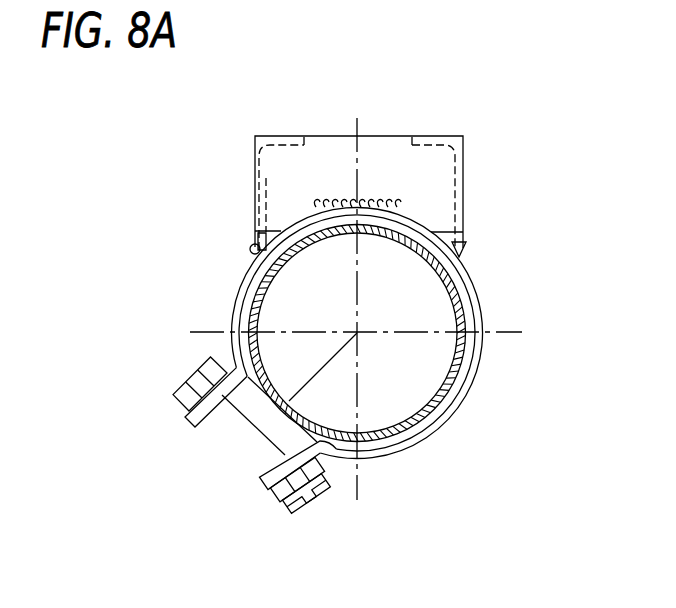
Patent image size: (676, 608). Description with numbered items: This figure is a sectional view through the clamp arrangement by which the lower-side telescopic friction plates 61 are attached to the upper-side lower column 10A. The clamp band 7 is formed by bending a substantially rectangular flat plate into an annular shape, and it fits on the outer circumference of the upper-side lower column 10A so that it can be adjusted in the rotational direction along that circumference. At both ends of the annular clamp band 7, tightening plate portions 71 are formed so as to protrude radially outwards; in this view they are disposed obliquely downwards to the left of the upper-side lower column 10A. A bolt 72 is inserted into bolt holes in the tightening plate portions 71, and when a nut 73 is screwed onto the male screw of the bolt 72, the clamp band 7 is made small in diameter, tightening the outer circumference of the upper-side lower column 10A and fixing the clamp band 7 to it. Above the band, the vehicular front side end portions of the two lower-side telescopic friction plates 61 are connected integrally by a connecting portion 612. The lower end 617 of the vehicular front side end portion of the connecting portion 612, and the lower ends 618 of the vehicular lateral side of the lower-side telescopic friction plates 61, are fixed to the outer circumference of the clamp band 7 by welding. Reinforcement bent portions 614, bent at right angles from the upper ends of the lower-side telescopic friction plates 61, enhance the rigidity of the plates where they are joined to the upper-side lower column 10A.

The clamp band 7 is at (437, 412).
The upper-side lower column 10A is at (418, 406).
The lower-side telescopic friction plates 61 is at (254, 163).
The connecting portion 612 is at (338, 146).
The reinforcement bent portions 614 is at (278, 137).
The lower end of the connecting portion 617 is at (378, 199).
The lower ends of the lower-side telescopic friction plates 618 is at (250, 247).
The tightening plate portions 71 is at (194, 426).
The bolt 72 is at (252, 452).
The nut 73 is at (290, 512).